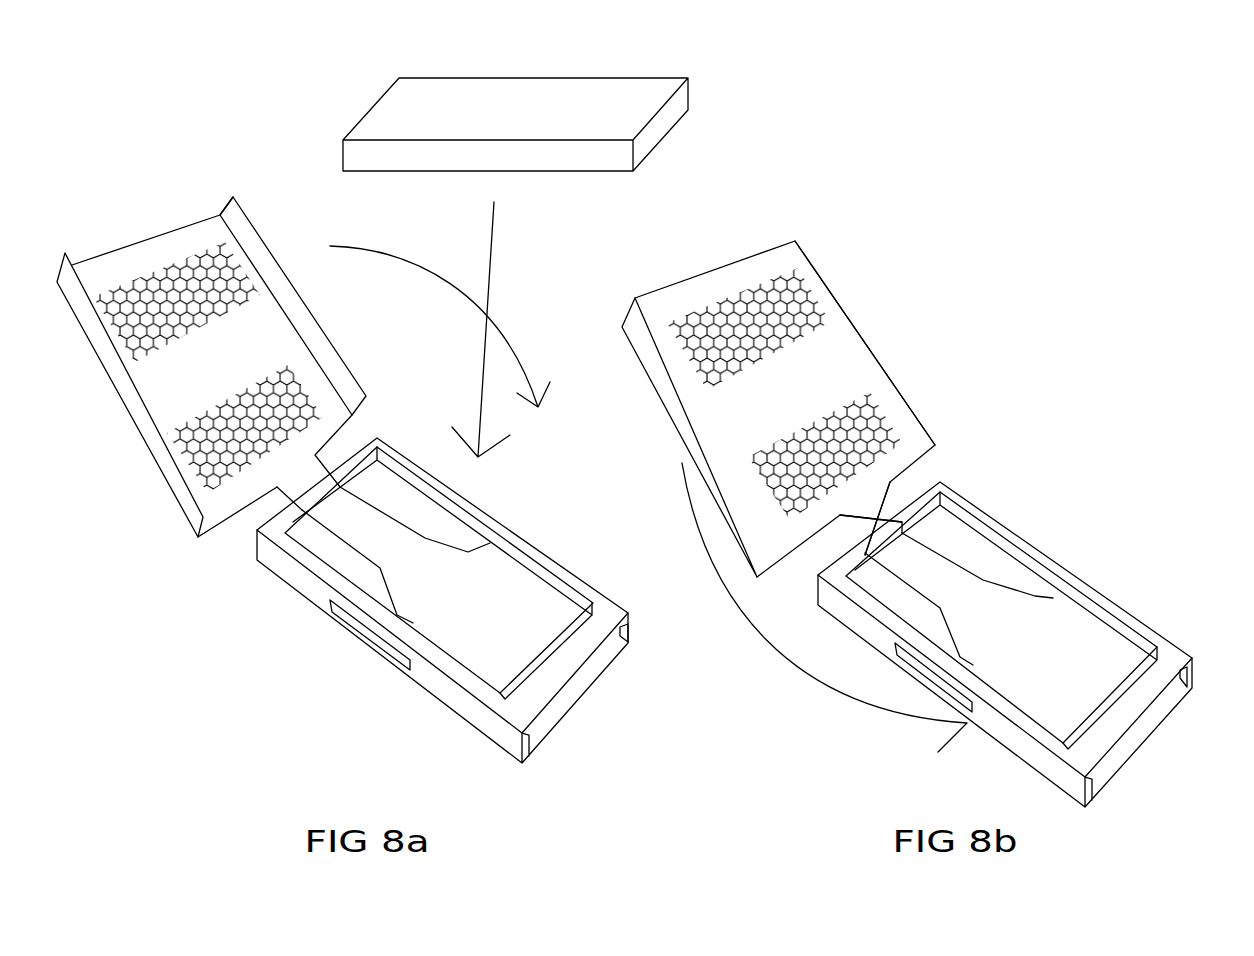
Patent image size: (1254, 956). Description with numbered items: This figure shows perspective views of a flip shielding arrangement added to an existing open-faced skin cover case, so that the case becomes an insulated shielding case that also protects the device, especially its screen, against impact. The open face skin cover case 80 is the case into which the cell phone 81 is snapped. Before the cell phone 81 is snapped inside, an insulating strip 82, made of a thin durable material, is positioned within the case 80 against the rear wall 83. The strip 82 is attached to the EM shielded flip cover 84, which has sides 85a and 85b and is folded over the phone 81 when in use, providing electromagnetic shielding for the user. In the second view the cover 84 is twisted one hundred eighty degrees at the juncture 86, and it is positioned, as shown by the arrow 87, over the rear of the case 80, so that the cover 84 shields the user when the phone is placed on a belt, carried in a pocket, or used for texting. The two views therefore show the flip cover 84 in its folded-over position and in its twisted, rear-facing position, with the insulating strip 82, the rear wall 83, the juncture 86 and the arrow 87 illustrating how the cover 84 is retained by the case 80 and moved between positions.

In FIG. 8A, the open face skin cover case 80 is at (429, 600).
In FIG. 8B, the open face skin cover case 80 is at (1010, 644).
In FIG. 8A, the cell phone 81 is at (553, 98).
In FIG. 8A, the insulating strip 82 is at (473, 587).
In FIG. 8B, the insulating strip 82 is at (1052, 650).
In FIG. 8A, the rear wall 83 is at (333, 563).
In FIG. 8B, the rear wall 83 is at (915, 617).
In FIG. 8A, the EM shielded flip cover 84 is at (231, 355).
In FIG. 8B, the EM shielded flip cover 84 is at (790, 372).
In FIG. 8A, the side 85a is at (172, 475).
In FIG. 8B, the side 85a is at (646, 353).
In FIG. 8A, the side 85b is at (305, 316).
In FIG. 8B, the side 85b is at (877, 352).
In FIG. 8B, the juncture 86 is at (880, 537).
In FIG. 8B, the arrow 87 is at (817, 688).